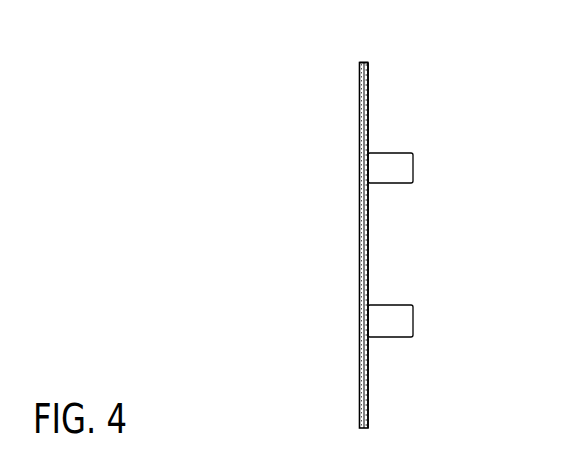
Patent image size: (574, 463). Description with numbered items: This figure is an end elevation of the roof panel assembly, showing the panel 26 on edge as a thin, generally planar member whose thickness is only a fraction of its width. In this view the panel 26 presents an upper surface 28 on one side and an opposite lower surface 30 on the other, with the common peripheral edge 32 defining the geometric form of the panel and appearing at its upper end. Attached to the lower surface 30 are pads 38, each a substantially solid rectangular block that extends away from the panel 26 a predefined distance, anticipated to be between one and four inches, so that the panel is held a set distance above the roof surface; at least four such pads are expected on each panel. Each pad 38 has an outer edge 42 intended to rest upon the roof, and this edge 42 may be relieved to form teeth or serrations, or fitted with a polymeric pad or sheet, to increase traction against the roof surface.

The panel 26 is at (316, 258).
The upper surface 28 is at (358, 142).
The lower surface 30 is at (368, 88).
The peripheral edge 32 is at (362, 62).
The pad 38 is at (394, 138).
The edge 42 is at (413, 173).